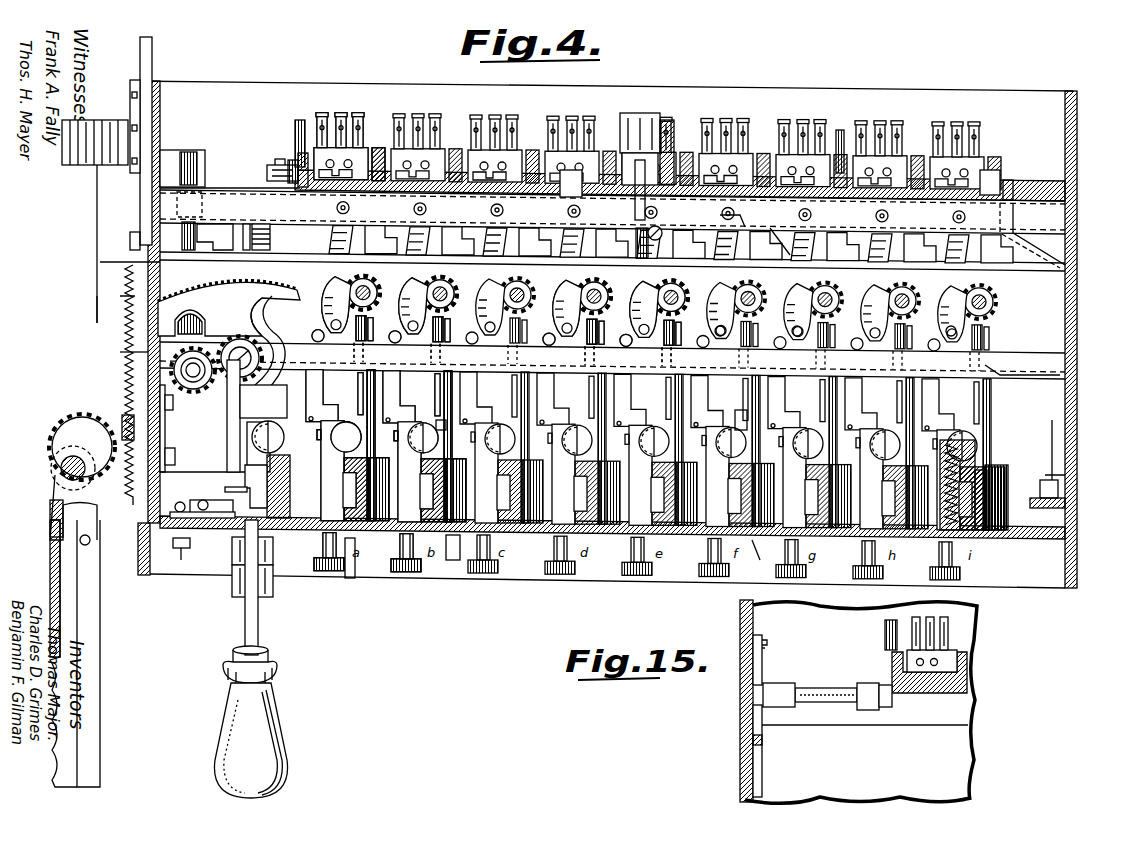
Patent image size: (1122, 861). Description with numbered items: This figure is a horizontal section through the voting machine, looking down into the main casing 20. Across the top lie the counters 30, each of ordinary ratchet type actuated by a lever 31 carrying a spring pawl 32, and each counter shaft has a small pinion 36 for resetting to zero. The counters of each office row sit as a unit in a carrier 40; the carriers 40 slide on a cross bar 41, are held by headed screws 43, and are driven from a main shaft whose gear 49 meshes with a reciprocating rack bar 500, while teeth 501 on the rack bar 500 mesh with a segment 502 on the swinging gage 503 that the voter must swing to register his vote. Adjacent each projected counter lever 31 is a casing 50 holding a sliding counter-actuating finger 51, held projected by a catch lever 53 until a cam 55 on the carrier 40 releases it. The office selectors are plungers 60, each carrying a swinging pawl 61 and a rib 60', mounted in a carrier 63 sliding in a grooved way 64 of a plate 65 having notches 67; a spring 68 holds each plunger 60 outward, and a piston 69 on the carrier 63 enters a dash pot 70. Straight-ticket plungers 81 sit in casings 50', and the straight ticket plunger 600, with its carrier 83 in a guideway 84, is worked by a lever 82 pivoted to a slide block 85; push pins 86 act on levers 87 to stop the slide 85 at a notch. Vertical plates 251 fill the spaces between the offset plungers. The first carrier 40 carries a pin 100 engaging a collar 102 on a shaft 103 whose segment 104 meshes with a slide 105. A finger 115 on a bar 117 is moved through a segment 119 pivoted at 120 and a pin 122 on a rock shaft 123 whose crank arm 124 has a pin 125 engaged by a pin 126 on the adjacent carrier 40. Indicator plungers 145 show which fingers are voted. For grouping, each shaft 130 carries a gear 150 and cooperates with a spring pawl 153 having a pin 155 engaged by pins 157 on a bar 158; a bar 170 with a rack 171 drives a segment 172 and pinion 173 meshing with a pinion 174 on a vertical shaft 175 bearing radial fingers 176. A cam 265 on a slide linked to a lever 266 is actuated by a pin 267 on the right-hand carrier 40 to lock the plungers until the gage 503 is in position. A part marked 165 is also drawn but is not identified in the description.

In FIG. 4, the main casing 20 is at (1077, 190).
In FIG. 4, the counters 30 is at (340, 115).
In FIG. 15, the counters 30 is at (938, 622).
In FIG. 4, the lever 31 is at (638, 160).
In FIG. 4, the spring pawl 32 is at (668, 165).
In FIG. 4, the small pinion 36 is at (298, 122).
In FIG. 15, the small pinion 36 is at (885, 630).
In FIG. 4, the carrier 40 is at (995, 180).
In FIG. 15, the carrier 40 is at (970, 686).
In FIG. 4, the cross bar 41 is at (1030, 210).
In FIG. 4, the headed screws 43 is at (562, 170).
In FIG. 4, the gear 49 is at (140, 212).
In FIG. 4, the casing 50 is at (777, 230).
In FIG. 4, the casing 50' is at (215, 224).
In FIG. 4, the counter-actuating finger 51 is at (636, 240).
In FIG. 4, the catch lever 53 is at (663, 240).
In FIG. 4, the cams 55 is at (728, 233).
In FIG. 4, the plunger 60 is at (676, 471).
In FIG. 4, the rib 60' is at (632, 574).
In FIG. 4, the pawl 61 is at (470, 330).
In FIG. 4, the carrier 63 is at (992, 482).
In FIG. 4, the grooved way 64 is at (985, 468).
In FIG. 4, the plate 65 is at (453, 542).
In FIG. 4, the notches 67 is at (755, 546).
In FIG. 4, the spring 68 is at (1005, 510).
In FIG. 4, the vertical piston 69 is at (345, 428).
In FIG. 4, the dash pot 70 is at (348, 425).
In FIG. 4, the plunger 81 is at (268, 230).
In FIG. 4, the lever 82 is at (278, 695).
In FIG. 4, the carrier 83 is at (283, 565).
In FIG. 4, the guideway 84 is at (298, 535).
In FIG. 4, the slide block 85 is at (240, 545).
In FIG. 4, the push pins 86 is at (175, 562).
In FIG. 4, the lever 87 is at (215, 503).
In FIG. 15, the pin 100 is at (890, 678).
In FIG. 15, the collar 102 is at (885, 705).
In FIG. 15, the shaft 103 is at (825, 688).
In FIG. 15, the segment 104 is at (762, 727).
In FIG. 15, the slide 105 is at (764, 663).
In FIG. 4, the finger 115 is at (240, 487).
In FIG. 4, the bar 117 is at (175, 458).
In FIG. 4, the segment 119 is at (145, 380).
In FIG. 4, the pivot 120 is at (173, 400).
In FIG. 4, the pin 122 is at (130, 343).
In FIG. 4, the rock shaft 123 is at (195, 236).
In FIG. 4, the crank arm 124 is at (215, 185).
In FIG. 4, the pin 125 is at (275, 163).
In FIG. 4, the pin 126 is at (268, 173).
In FIG. 4, the shaft 130 is at (685, 330).
In FIG. 4, the indicator plunger 145 is at (742, 418).
In FIG. 4, the gear 150 is at (602, 330).
In FIG. 4, the spring pawl 153 is at (310, 335).
In FIG. 4, the pin 155 is at (975, 338).
In FIG. 4, the pins 157 is at (812, 332).
In FIG. 4, the bar 158 is at (1000, 378).
In FIG. 4, the pivot 165 is at (760, 332).
In FIG. 4, the bar 170 is at (540, 256).
In FIG. 4, the rack 171 is at (130, 298).
In FIG. 4, the segment 172 is at (200, 320).
In FIG. 4, the pinion 173 is at (238, 345).
In FIG. 4, the pinion 174 is at (125, 420).
In FIG. 4, the vertical shaft 175 is at (197, 352).
In FIG. 4, the radial fingers 176 is at (268, 348).
In FIG. 4, the vertical plates 251 is at (438, 420).
In FIG. 4, the cam 265 is at (1052, 490).
In FIG. 4, the lever 266 is at (1053, 450).
In FIG. 4, the pin 267 is at (1010, 185).
In FIG. 4, the rack bar 500 is at (140, 248).
In FIG. 4, the teeth 501 is at (130, 355).
In FIG. 4, the segment 502 is at (50, 420).
In FIG. 4, the swinging gage 503 is at (100, 668).
In FIG. 4, the straight ticket plunger 600 is at (250, 410).